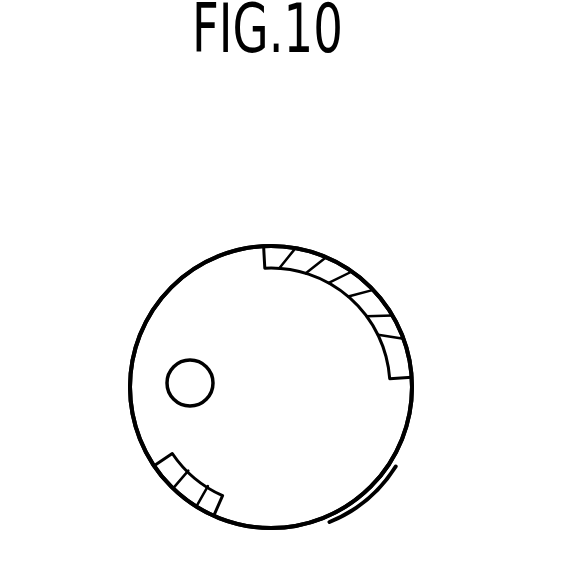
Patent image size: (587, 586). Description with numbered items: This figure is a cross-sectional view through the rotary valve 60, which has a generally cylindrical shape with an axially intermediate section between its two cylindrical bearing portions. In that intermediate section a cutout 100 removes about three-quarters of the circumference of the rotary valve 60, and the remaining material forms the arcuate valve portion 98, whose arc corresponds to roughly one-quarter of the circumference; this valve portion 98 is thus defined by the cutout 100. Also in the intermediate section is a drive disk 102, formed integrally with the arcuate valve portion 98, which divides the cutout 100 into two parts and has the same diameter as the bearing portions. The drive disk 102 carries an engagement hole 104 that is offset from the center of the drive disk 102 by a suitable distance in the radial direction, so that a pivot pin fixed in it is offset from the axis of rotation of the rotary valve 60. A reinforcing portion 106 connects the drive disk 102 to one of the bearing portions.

The rotary valve 60 is at (391, 240).
The arcuate valve portion 98 is at (388, 328).
The cutout 100 is at (271, 387).
The drive disk 102 is at (363, 450).
The engagement hole 104 is at (173, 385).
The reinforcing portion 106 is at (188, 492).